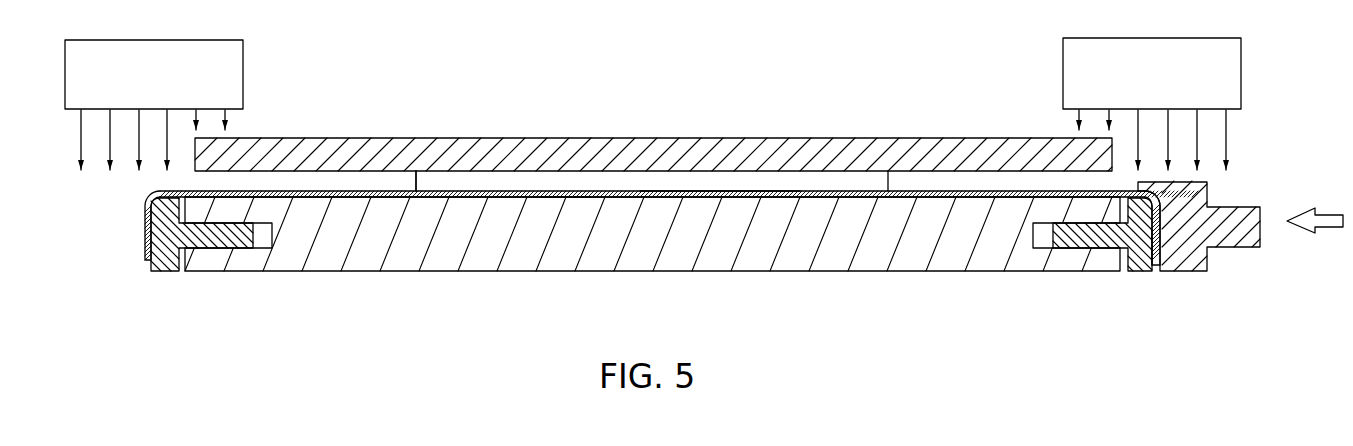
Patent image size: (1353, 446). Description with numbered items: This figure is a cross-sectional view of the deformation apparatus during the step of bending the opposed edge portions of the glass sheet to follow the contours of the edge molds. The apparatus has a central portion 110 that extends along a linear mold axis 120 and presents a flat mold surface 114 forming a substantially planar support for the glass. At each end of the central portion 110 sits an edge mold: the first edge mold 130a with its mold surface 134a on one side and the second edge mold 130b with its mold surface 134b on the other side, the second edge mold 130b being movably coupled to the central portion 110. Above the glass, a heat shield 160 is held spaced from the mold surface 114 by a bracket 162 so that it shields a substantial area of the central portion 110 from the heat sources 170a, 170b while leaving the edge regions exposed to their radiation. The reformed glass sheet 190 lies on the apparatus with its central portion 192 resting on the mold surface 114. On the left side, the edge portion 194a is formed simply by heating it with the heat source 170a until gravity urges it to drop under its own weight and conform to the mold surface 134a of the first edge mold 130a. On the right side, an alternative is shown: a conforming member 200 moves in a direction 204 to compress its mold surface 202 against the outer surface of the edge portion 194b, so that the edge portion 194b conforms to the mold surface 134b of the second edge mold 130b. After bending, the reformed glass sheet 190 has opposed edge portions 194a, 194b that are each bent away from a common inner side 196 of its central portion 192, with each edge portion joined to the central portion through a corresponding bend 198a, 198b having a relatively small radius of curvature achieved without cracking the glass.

The central portion 110 is at (652, 261).
The mold surface 114 is at (714, 189).
The linear mold axis 120 is at (877, 235).
The first edge mold 130a is at (156, 282).
The second edge mold 130b is at (1165, 279).
The mold surface of the first edge mold 134a is at (158, 189).
The mold surface of the second edge mold 134b is at (1146, 189).
The heat shield 160 is at (906, 138).
The bracket 162 is at (412, 179).
The heat source 170a is at (243, 72).
The heat source 170b is at (1063, 70).
The reformed glass sheet 190 is at (794, 177).
The central portion of the reformed glass sheet 192 is at (625, 190).
The edge portion of the reformed glass sheet 194a is at (149, 242).
The edge portion of the reformed glass sheet 194b is at (1160, 260).
The common inner side 196 is at (566, 198).
The bend 198a is at (149, 194).
The bend 198b is at (1158, 191).
The conforming member 200 is at (1238, 248).
The mold surface of the conforming member 202 is at (1151, 247).
The direction 204 is at (1310, 203).